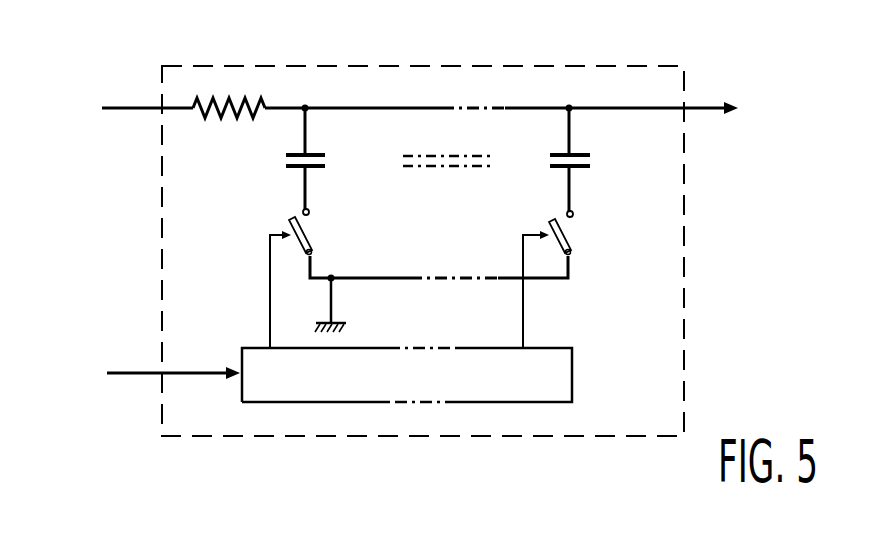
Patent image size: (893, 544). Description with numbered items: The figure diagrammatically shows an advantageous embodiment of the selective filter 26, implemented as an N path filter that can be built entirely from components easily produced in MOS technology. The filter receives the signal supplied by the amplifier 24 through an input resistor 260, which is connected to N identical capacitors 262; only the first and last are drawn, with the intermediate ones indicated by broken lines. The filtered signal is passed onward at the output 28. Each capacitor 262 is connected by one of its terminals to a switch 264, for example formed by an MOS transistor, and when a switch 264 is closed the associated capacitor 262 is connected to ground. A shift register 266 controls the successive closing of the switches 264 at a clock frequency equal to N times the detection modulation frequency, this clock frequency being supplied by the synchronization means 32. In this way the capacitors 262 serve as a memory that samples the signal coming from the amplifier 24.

The selective filter 26 is at (470, 60).
The amplifier 24 is at (106, 109).
The output signal 28 is at (535, 109).
The synchronization means 32 is at (132, 374).
The input resistor 260 is at (242, 103).
The capacitors 262 is at (285, 163).
The switch 264 is at (291, 224).
The shift register 266 is at (353, 390).